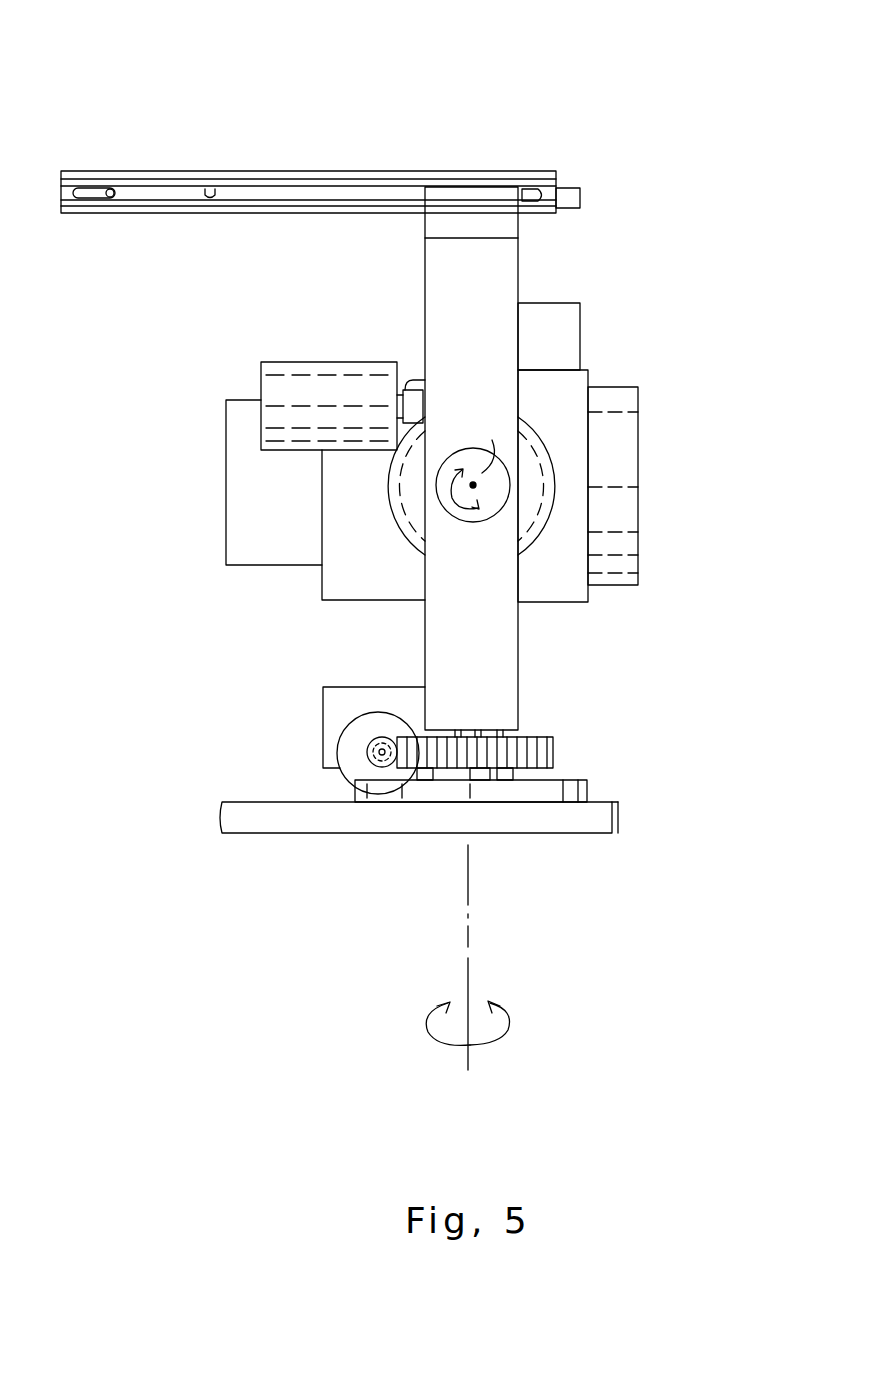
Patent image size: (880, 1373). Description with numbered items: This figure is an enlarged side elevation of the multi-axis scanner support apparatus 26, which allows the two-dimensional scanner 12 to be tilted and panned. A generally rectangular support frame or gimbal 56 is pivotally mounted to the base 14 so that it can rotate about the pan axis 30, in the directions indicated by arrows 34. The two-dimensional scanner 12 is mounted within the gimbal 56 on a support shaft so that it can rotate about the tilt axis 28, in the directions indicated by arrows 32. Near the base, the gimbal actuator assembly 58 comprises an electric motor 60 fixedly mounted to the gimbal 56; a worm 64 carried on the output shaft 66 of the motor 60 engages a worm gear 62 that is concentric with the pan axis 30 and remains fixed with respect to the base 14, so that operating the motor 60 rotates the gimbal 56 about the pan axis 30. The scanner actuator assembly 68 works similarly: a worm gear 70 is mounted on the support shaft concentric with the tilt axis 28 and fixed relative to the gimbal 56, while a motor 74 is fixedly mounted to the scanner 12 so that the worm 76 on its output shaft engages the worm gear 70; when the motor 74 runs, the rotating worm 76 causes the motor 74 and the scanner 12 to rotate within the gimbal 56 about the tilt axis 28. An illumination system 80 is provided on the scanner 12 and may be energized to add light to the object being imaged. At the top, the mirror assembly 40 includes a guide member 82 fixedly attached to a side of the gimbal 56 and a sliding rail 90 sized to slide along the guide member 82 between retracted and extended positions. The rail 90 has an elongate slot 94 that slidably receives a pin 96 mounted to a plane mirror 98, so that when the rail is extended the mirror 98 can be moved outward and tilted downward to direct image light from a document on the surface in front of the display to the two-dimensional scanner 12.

The two-dimensional scanner 12 is at (224, 462).
The base 14 is at (612, 815).
The multi-axis scanner support apparatus 26 is at (75, 103).
The tilt axis 28 is at (476, 483).
The pan axis 30 is at (468, 958).
The arrows 32 is at (460, 505).
The arrows 34 is at (480, 1040).
The mirror assembly 40 is at (457, 172).
The support frame or gimbal 56 is at (530, 689).
The gimbal actuator assembly 58 is at (318, 685).
The electric motor 60 is at (352, 712).
The worm gear 62 is at (553, 745).
The worm 64 is at (345, 756).
The output shaft 66 is at (380, 752).
The scanner actuator assembly 68 is at (256, 378).
The worm gear 70 is at (392, 502).
The motor 74 is at (345, 362).
The worm 76 is at (415, 388).
The illumination system 80 is at (580, 332).
The guide member 82 is at (519, 230).
The sliding rail 90 is at (392, 172).
The elongate slot 94 is at (215, 190).
The pin 96 is at (106, 195).
The plane mirror 98 is at (580, 197).